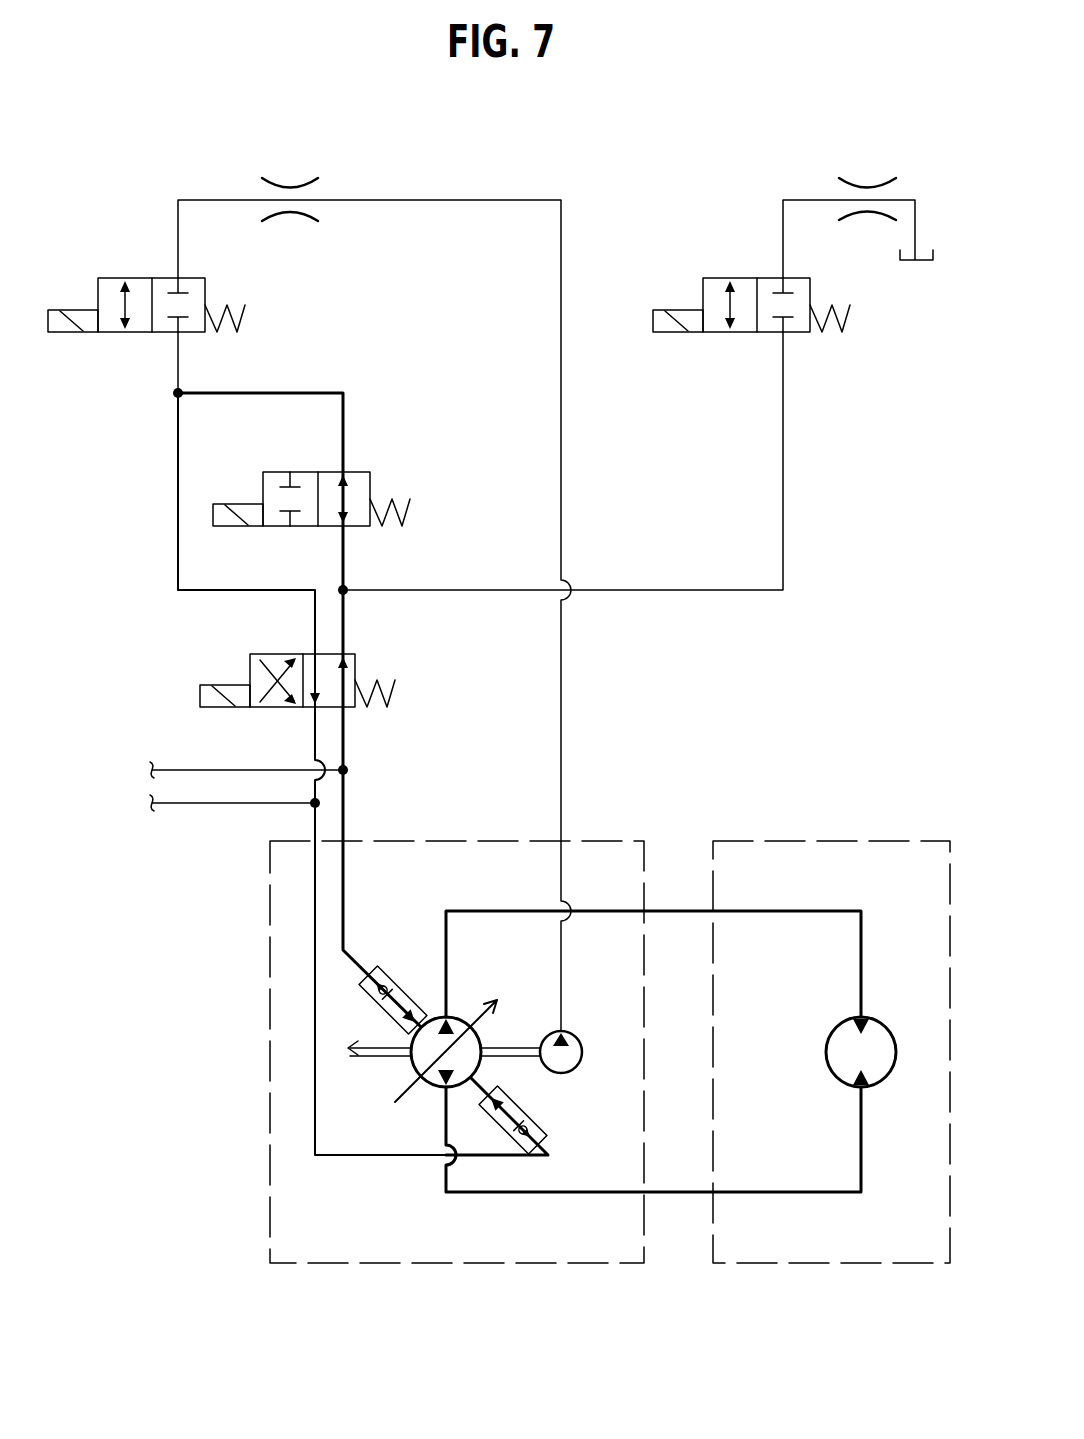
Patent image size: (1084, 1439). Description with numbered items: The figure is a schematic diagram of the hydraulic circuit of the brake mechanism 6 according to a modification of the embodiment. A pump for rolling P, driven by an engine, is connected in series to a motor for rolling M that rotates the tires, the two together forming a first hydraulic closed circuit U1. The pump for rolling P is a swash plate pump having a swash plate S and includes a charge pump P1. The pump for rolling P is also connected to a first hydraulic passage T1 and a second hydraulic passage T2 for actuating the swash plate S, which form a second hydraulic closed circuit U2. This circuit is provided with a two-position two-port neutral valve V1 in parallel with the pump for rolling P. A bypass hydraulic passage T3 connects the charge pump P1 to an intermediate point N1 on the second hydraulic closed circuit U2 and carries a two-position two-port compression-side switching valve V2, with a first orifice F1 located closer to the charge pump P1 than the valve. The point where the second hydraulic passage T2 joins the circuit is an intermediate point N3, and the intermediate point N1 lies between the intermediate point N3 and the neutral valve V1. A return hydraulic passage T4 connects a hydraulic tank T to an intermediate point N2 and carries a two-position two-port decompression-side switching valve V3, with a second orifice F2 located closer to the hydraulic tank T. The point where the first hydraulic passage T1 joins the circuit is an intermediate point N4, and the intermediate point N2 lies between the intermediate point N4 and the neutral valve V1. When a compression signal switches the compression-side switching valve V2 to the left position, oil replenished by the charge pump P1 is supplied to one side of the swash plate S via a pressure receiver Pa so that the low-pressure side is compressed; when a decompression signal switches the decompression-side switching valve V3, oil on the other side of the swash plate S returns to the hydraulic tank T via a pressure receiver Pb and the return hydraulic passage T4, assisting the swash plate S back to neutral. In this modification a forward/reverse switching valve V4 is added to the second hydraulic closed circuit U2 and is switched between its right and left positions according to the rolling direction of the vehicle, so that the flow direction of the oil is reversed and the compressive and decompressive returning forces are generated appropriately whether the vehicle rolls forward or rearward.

The brake mechanism 6 is at (243, 1233).
The neutral valve V1 is at (365, 449).
The compression-side switching valve V2 is at (154, 251).
The decompression-side switching valve V3 is at (760, 251).
The forward/reverse switching valve V4 is at (285, 634).
The first orifice F1 is at (300, 183).
The second orifice F2 is at (876, 182).
The hydraulic tank T is at (928, 262).
The first hydraulic passage T1 is at (195, 768).
The second hydraulic passage T2 is at (192, 805).
The bypass hydraulic passage T3 is at (492, 200).
The return hydraulic passage T4 is at (785, 556).
The intermediate point N1 is at (175, 396).
The intermediate point N2 is at (346, 594).
The intermediate point N3 is at (312, 806).
The intermediate point N4 is at (350, 768).
The pump for rolling P is at (455, 1265).
The motor for rolling M is at (800, 1265).
The swash plate S is at (473, 1013).
The pressure receiver Pa is at (533, 1107).
The pressure receiver Pb is at (380, 967).
The charge pump P1 is at (580, 1068).
The first hydraulic closed circuit U1 is at (665, 1194).
The second hydraulic closed circuit U2 is at (358, 1157).